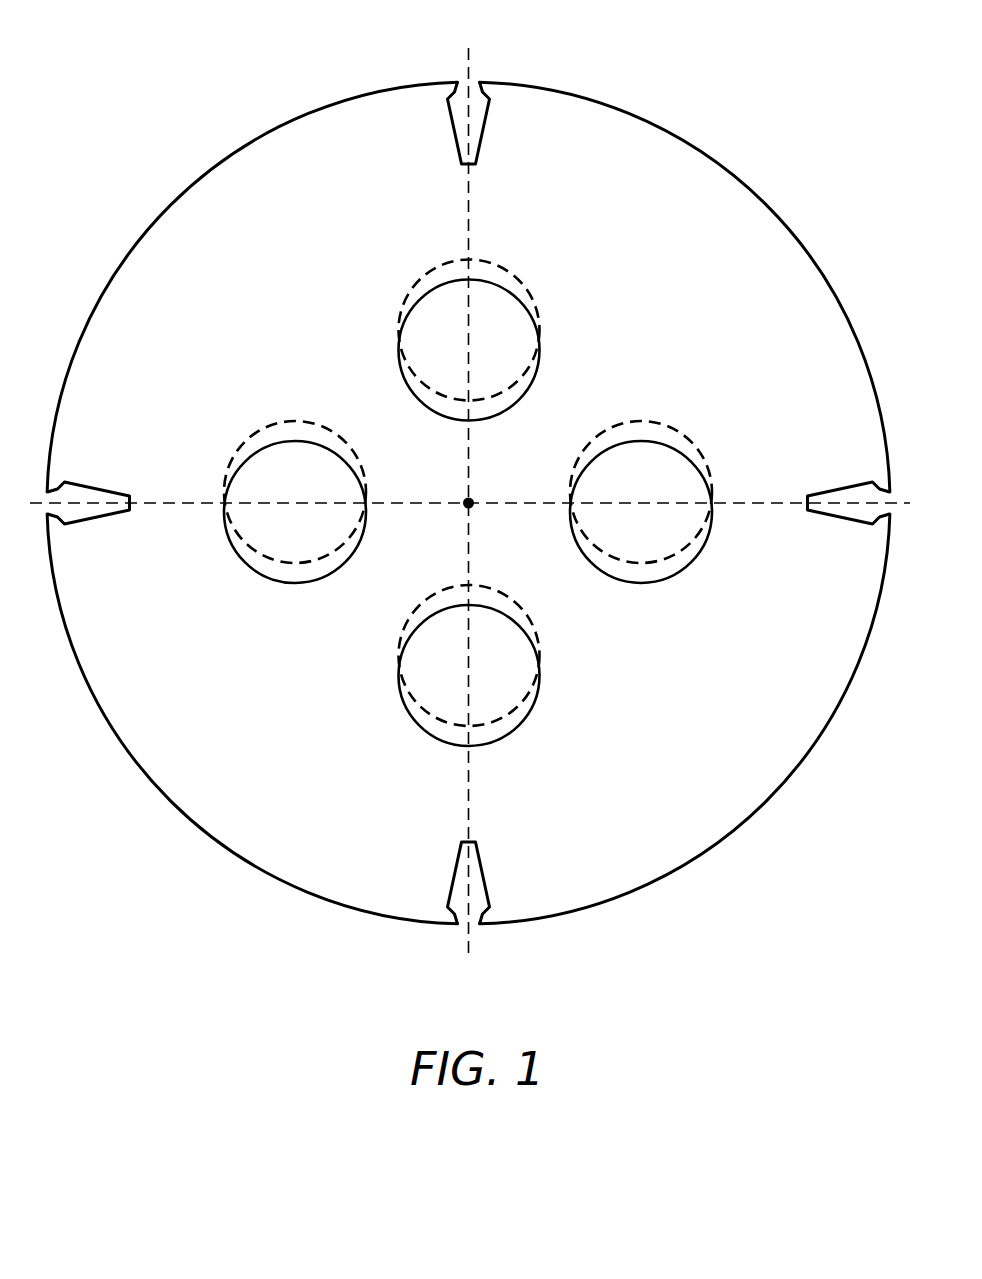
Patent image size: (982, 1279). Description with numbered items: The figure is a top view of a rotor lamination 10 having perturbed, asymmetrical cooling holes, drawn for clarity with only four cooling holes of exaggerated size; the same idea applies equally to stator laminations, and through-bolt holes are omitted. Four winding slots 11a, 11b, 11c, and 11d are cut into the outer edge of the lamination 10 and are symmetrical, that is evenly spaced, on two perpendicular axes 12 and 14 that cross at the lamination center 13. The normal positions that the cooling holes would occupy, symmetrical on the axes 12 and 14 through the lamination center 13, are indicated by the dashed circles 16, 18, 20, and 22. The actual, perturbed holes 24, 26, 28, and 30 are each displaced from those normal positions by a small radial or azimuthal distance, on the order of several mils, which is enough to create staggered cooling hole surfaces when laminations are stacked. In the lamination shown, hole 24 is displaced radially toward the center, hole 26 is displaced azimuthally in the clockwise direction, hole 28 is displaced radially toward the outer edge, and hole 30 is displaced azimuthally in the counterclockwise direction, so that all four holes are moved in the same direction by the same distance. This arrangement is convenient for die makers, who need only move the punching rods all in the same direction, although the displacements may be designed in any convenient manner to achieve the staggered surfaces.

The rotor lamination 10 is at (627, 125).
The winding slot 11a is at (845, 487).
The winding slot 11b is at (488, 120).
The winding slot 11c is at (95, 486).
The winding slot 11d is at (482, 873).
The axis 12 is at (468, 778).
The lamination center 13 is at (473, 505).
The axis 14 is at (500, 503).
The dashed circle 16 is at (487, 262).
The dashed circle 18 is at (298, 422).
The dashed circle 20 is at (533, 632).
The dashed circle 22 is at (655, 423).
The perturbed cooling hole 24 is at (483, 420).
The perturbed cooling hole 26 is at (297, 583).
The perturbed cooling hole 28 is at (513, 728).
The perturbed cooling hole 30 is at (642, 583).